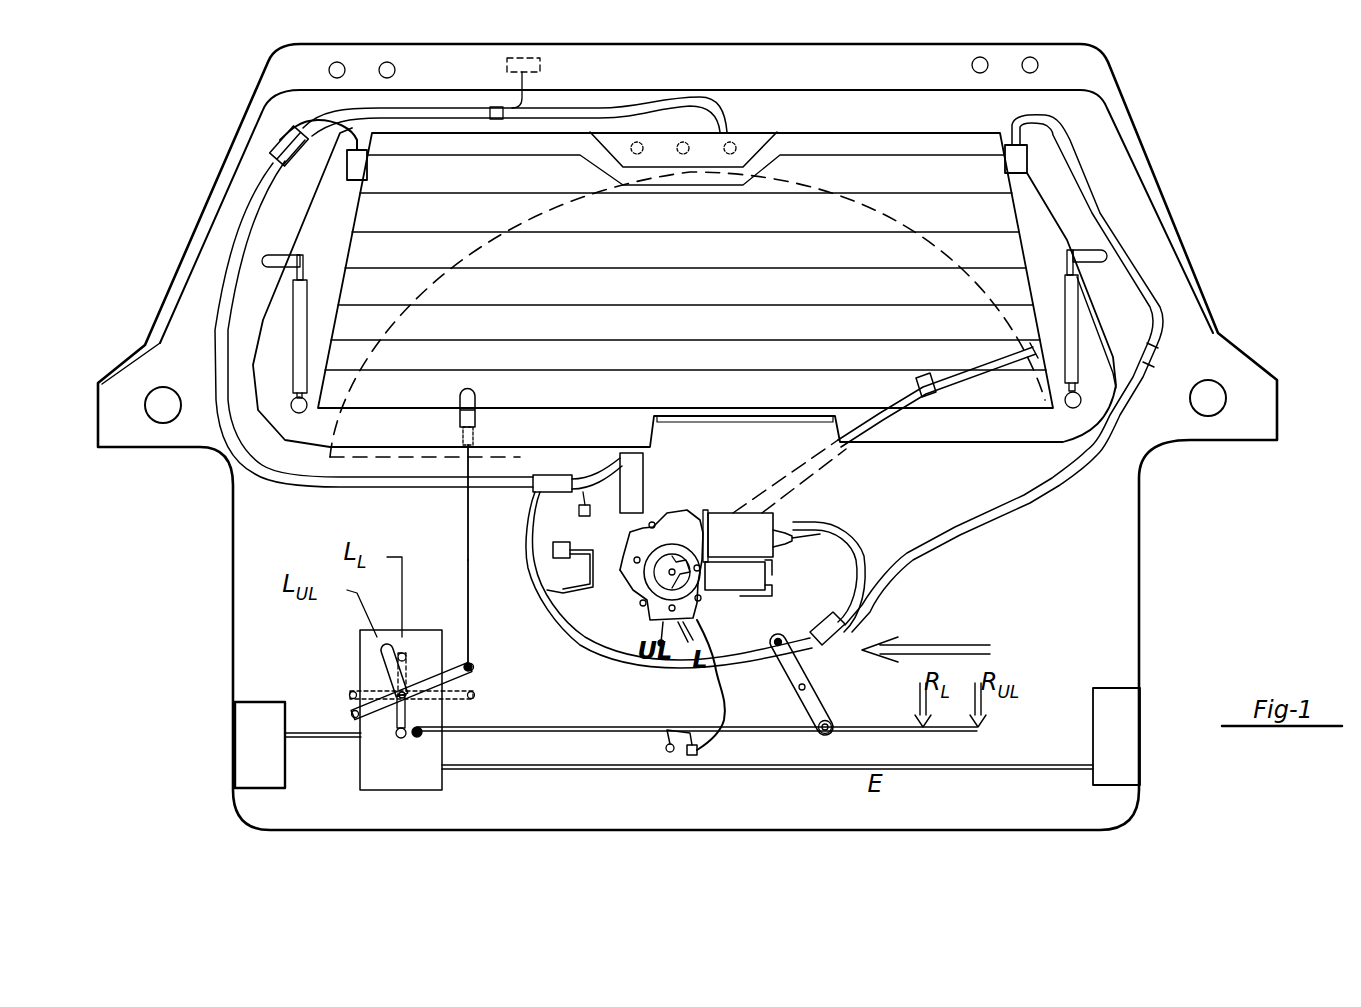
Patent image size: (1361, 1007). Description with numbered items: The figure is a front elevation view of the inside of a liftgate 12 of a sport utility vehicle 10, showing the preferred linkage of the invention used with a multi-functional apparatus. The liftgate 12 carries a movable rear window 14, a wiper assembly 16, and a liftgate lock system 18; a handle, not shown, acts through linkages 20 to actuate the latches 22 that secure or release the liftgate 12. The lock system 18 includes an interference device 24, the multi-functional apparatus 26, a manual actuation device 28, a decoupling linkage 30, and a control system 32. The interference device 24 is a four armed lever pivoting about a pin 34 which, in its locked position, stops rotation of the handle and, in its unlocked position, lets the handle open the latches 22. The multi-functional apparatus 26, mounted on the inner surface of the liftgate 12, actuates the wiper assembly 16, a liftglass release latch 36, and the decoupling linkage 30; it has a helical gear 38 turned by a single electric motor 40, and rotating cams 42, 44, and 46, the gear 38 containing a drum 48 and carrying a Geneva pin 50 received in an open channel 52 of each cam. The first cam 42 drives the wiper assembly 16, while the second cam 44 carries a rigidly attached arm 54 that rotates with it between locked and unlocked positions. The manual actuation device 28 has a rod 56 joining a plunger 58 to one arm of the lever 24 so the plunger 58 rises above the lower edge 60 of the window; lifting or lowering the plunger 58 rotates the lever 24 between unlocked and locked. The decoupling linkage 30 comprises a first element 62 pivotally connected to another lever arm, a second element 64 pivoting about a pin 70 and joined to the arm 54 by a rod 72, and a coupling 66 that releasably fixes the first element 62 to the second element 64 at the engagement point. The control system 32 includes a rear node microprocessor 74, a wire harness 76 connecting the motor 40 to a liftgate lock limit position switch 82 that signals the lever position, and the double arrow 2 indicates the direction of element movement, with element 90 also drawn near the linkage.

The direction of movement 2 is at (938, 649).
The sport utility vehicle 10 is at (1192, 162).
The liftgate 12 is at (1120, 582).
The rear window 14 is at (985, 418).
The wiper assembly 16 is at (880, 380).
The liftgate lock system 18 is at (930, 565).
The linkages 20 is at (333, 738).
The latches 22 is at (243, 735).
The interference device 24 is at (365, 688).
The multi-functional apparatus 26 is at (685, 482).
The manual actuation device 28 is at (462, 529).
The decoupling linkage 30 is at (820, 725).
The control system 32 is at (548, 604).
The pin 34 is at (397, 712).
The liftglass release latch 36 is at (633, 455).
The helical gear 38 is at (643, 602).
The electric motor 40 is at (772, 530).
The first cam 42 is at (700, 520).
The second cam 44 is at (706, 577).
The cam 46 is at (605, 582).
The drum 48 is at (680, 552).
The Geneva pin 50 is at (758, 593).
The open channel 52 is at (640, 578).
The arm 54 is at (660, 631).
The rod 56 is at (470, 575).
The plunger 58 is at (460, 400).
The lower edge 60 is at (500, 447).
The first element 62 is at (512, 727).
The second element 64 is at (803, 640).
The coupling 66 is at (836, 716).
The pin 70 is at (796, 690).
The rod 72 is at (718, 645).
The rear node microprocessor 74 is at (768, 567).
The wire harness 76 is at (306, 483).
The liftgate lock limit position switch 82 is at (695, 755).
The lever pivot 90 is at (822, 734).